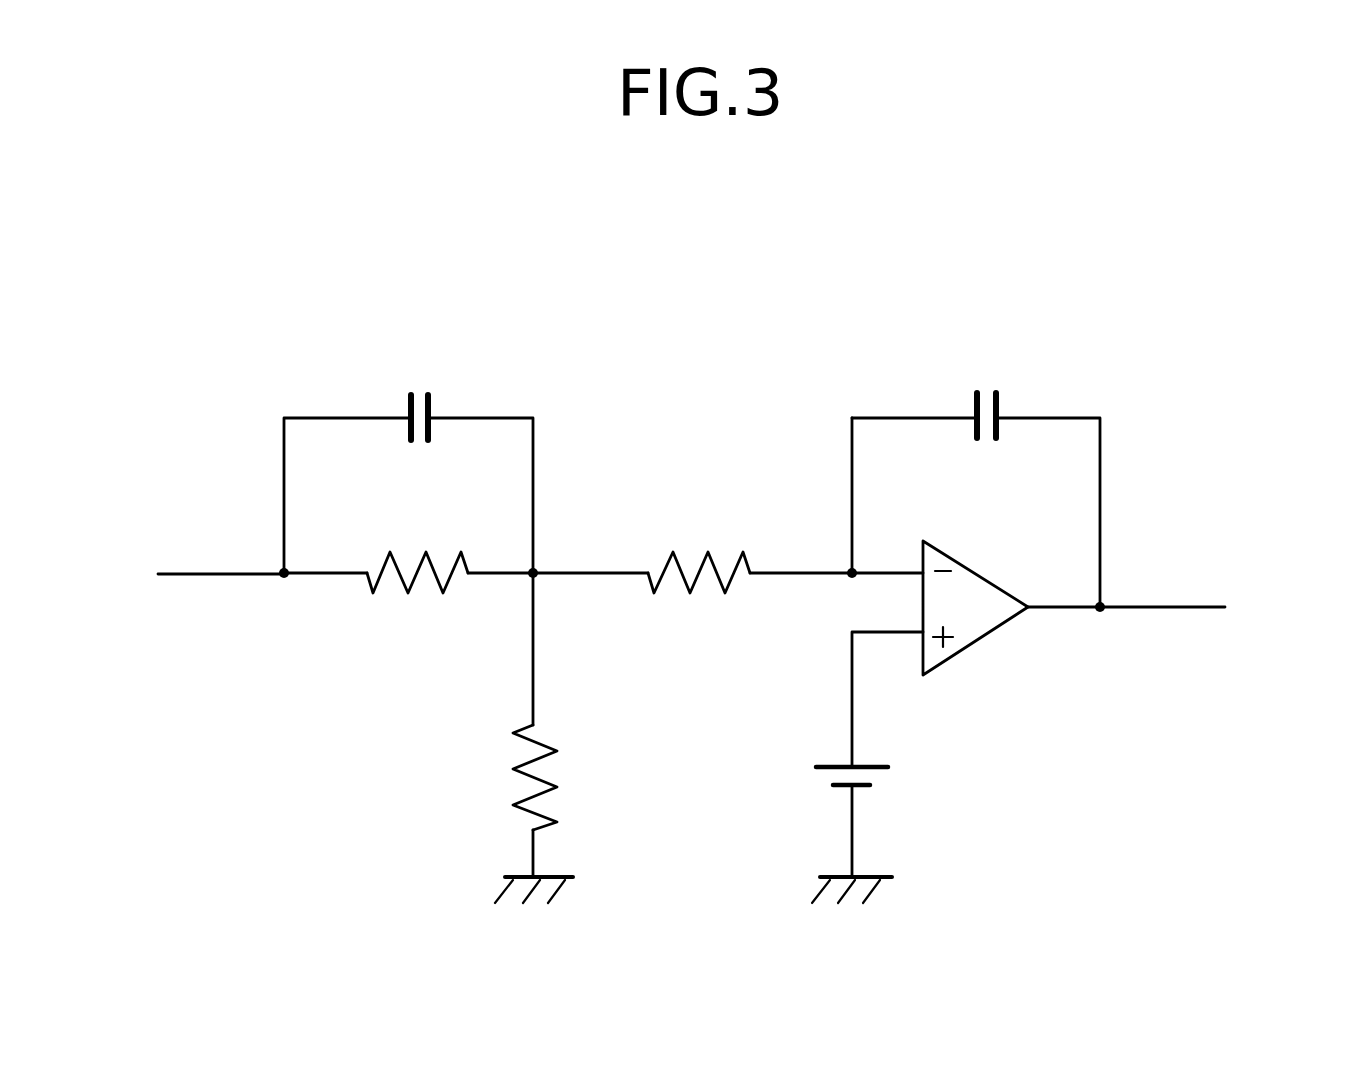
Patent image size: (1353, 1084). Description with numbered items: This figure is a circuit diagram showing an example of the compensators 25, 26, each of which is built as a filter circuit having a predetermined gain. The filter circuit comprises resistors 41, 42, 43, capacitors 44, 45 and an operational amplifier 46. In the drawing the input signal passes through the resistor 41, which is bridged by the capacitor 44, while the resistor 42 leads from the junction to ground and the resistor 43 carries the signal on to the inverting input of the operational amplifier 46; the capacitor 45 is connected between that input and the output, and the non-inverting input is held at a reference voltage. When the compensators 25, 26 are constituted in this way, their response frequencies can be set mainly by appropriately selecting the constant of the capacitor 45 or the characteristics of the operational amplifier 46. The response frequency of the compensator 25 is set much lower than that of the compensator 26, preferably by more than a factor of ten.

The compensator 25 is at (717, 526).
The compensator 26 is at (717, 526).
The resistor 41 is at (415, 590).
The resistor 42 is at (530, 795).
The resistor 43 is at (702, 590).
The capacitor 44 is at (418, 395).
The capacitor 45 is at (983, 390).
The operational amplifier 46 is at (990, 630).